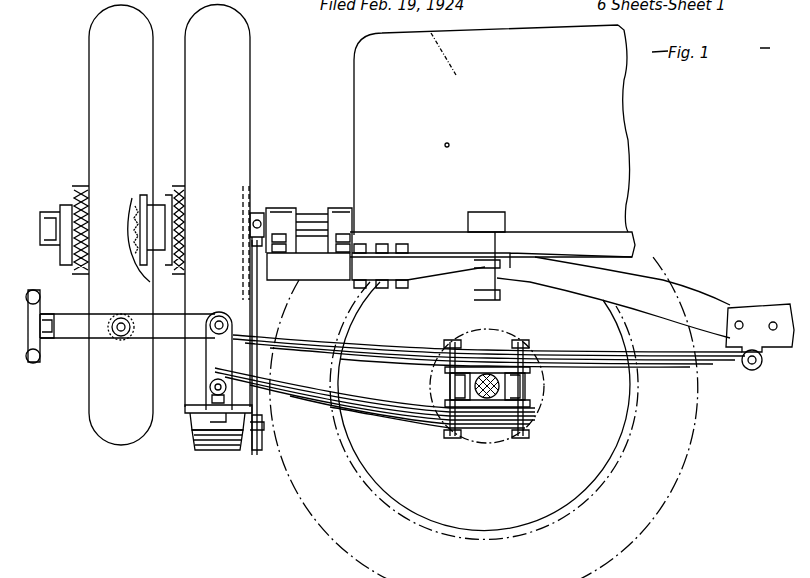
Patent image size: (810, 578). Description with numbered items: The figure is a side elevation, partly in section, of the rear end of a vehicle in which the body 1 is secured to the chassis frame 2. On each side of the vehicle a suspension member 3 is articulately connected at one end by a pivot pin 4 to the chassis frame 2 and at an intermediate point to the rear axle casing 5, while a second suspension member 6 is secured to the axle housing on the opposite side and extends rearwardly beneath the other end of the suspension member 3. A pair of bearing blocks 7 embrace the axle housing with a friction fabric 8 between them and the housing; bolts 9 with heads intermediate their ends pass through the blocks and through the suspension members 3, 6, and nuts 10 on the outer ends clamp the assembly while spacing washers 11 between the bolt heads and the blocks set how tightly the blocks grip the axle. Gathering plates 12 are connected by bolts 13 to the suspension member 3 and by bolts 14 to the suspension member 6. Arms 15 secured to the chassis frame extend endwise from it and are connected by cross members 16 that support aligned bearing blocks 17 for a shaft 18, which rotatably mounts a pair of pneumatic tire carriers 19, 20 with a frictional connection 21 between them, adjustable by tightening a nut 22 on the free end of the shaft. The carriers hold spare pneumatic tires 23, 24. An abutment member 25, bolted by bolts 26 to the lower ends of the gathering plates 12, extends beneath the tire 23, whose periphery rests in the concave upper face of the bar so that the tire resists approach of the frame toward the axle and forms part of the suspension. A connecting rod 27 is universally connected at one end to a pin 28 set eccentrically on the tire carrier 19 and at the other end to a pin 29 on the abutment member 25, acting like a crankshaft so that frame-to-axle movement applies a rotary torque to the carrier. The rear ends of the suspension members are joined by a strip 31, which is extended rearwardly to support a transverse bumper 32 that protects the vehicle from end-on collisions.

The body 1 is at (630, 247).
The chassis frame 2 is at (680, 296).
The suspension member 3 is at (398, 346).
The pivot pin 4 is at (751, 372).
The rear axle casing 5 is at (490, 405).
The second suspension member 6 is at (402, 423).
The bearing blocks 7 is at (505, 342).
The friction fabric 8 is at (484, 400).
The bolts 9 is at (527, 386).
The nuts 10 is at (530, 342).
The spacing washers 11 is at (450, 380).
The gathering plates 12 is at (206, 352).
The bolts 13 is at (224, 316).
The bolts 14 is at (209, 387).
The arms 15 is at (330, 278).
The cross members 16 is at (296, 250).
The bearing blocks 17 is at (284, 207).
The shaft 18 is at (322, 212).
The tire carrier 19 is at (182, 184).
The tire carrier 20 is at (86, 184).
The frictional connection 21 is at (138, 201).
The nut 22 is at (54, 220).
The pneumatic tire 23 is at (250, 56).
The pneumatic tire 24 is at (144, 25).
The abutment member 25 is at (226, 450).
The bolts 26 is at (198, 432).
The connecting rod 27 is at (258, 298).
The pin 28 is at (259, 212).
The pin 29 is at (257, 452).
The strip 31 is at (140, 320).
The bumper 32 is at (44, 312).